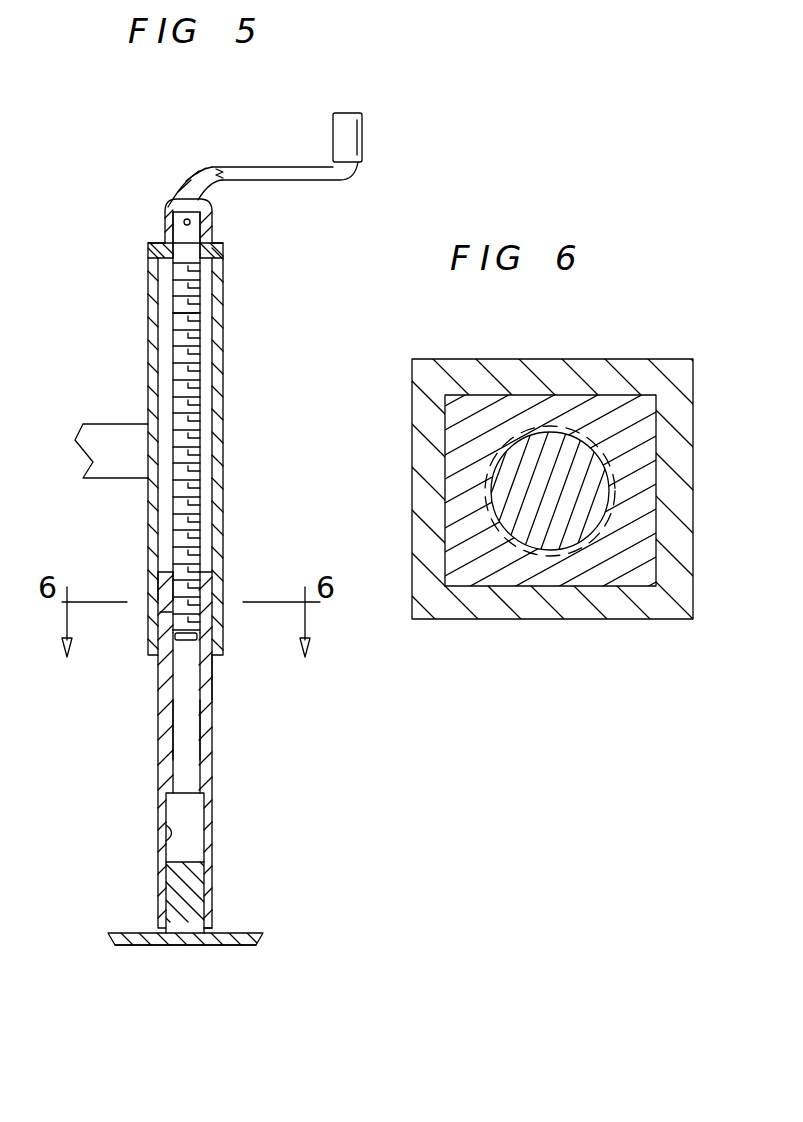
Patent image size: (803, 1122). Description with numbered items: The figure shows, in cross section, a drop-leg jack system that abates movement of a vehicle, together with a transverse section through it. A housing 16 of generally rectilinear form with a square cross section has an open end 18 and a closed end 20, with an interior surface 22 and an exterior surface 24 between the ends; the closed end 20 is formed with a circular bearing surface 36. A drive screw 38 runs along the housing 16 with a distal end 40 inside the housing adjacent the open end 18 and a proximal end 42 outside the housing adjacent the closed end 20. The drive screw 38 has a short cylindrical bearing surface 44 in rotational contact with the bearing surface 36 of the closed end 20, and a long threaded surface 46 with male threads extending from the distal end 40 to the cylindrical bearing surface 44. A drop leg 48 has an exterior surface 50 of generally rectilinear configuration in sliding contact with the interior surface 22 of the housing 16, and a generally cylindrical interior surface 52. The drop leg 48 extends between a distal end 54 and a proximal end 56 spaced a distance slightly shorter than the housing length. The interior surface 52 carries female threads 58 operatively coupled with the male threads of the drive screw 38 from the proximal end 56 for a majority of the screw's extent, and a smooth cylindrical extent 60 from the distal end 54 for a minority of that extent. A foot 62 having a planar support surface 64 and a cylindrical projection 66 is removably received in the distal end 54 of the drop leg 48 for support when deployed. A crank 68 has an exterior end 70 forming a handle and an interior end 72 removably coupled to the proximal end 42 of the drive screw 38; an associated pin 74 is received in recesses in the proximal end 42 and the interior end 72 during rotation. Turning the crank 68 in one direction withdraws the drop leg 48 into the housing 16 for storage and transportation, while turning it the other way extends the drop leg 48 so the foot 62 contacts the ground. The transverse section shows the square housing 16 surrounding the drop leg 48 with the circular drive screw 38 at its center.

In FIG. 6, the housing 16 is at (512, 618).
In FIG. 5, the open end 18 is at (213, 665).
In FIG. 5, the closed end 20 is at (109, 206).
In FIG. 5, the interior surface 22 is at (158, 365).
In FIG. 5, the exterior surface 24 is at (148, 507).
In FIG. 5, the circular bearing surface 36 is at (212, 233).
In FIG. 5, the drive screw 38 is at (185, 325).
In FIG. 6, the drive screw 38 is at (575, 480).
In FIG. 5, the distal end 40 is at (187, 640).
In FIG. 5, the proximal end 42 is at (168, 200).
In FIG. 5, the cylindrical bearing surface 44 is at (212, 226).
In FIG. 5, the threaded surface 46 is at (195, 498).
In FIG. 5, the drop leg 48 is at (213, 820).
In FIG. 6, the drop leg 48 is at (585, 575).
In FIG. 5, the exterior surface 50 is at (213, 710).
In FIG. 5, the interior surface 52 is at (200, 751).
In FIG. 5, the distal end 54 is at (207, 927).
In FIG. 5, the proximal end 56 is at (165, 568).
In FIG. 5, the female threads 58 is at (165, 612).
In FIG. 5, the smooth cylindrical extent 60 is at (166, 832).
In FIG. 5, the foot 62 is at (258, 933).
In FIG. 5, the planar support surface 64 is at (142, 945).
In FIG. 5, the cylindrical projection 66 is at (183, 862).
In FIG. 5, the crank 68 is at (273, 166).
In FIG. 5, the exterior end 70 is at (362, 136).
In FIG. 5, the interior end 72 is at (165, 222).
In FIG. 5, the pin 74 is at (186, 218).